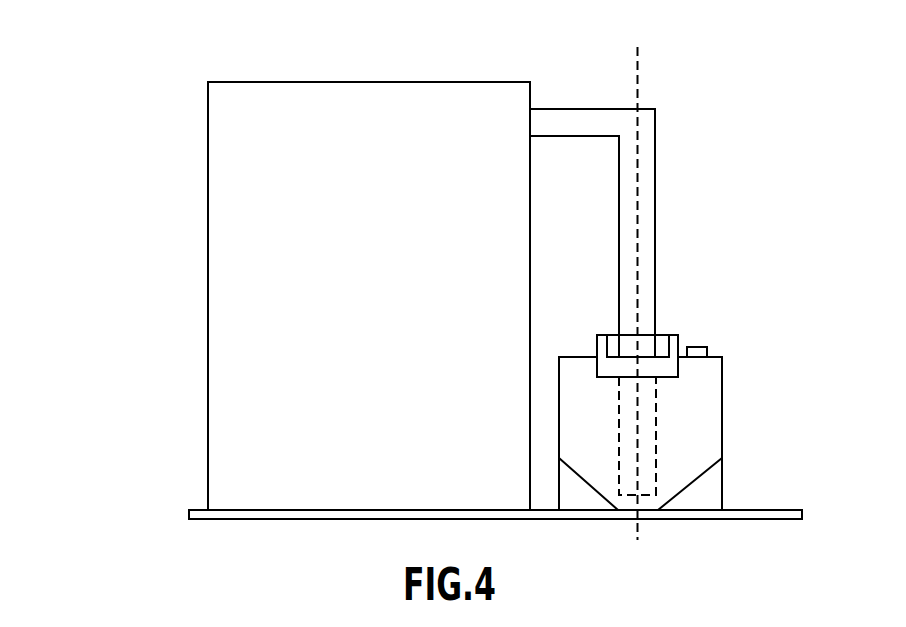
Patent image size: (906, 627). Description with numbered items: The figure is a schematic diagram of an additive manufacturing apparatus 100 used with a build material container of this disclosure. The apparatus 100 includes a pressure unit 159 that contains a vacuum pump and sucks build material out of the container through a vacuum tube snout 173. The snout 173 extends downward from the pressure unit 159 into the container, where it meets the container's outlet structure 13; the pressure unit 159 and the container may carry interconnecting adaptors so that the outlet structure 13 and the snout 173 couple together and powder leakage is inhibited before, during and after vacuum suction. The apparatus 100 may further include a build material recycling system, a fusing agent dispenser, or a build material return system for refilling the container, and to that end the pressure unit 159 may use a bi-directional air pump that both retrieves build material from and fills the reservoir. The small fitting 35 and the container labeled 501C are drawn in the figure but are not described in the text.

The additive manufacturing apparatus 100 is at (151, 109).
The pressure unit 159 is at (668, 182).
The vacuum tube snout 173 is at (618, 315).
The outlet structure 13 is at (660, 332).
The sensor / fitting 35 is at (703, 343).
The powder hopper / container 501C is at (742, 426).